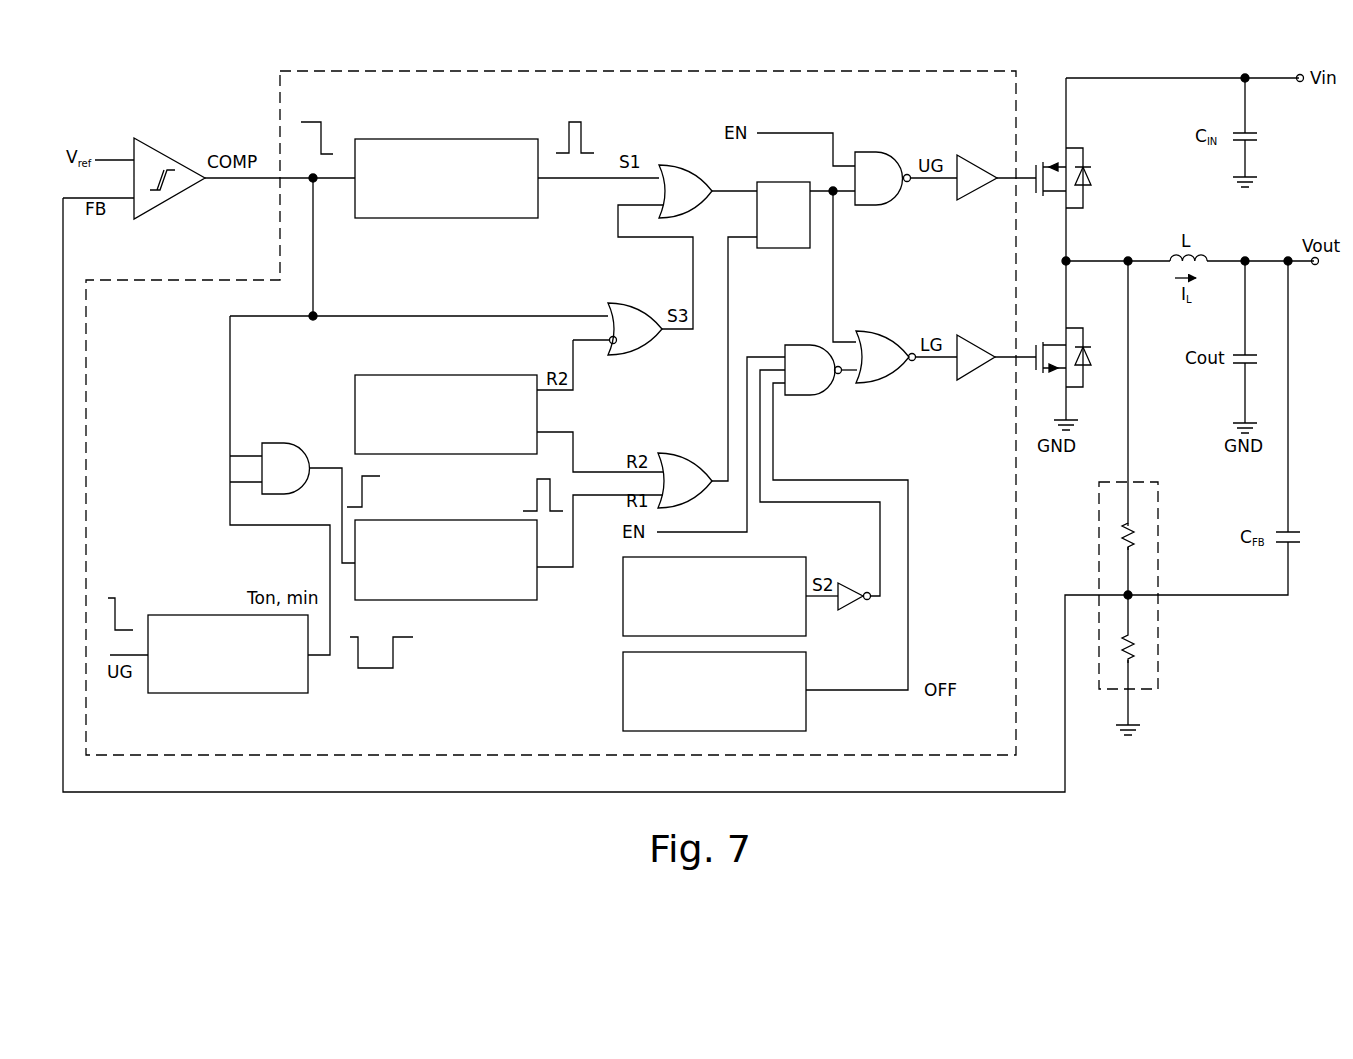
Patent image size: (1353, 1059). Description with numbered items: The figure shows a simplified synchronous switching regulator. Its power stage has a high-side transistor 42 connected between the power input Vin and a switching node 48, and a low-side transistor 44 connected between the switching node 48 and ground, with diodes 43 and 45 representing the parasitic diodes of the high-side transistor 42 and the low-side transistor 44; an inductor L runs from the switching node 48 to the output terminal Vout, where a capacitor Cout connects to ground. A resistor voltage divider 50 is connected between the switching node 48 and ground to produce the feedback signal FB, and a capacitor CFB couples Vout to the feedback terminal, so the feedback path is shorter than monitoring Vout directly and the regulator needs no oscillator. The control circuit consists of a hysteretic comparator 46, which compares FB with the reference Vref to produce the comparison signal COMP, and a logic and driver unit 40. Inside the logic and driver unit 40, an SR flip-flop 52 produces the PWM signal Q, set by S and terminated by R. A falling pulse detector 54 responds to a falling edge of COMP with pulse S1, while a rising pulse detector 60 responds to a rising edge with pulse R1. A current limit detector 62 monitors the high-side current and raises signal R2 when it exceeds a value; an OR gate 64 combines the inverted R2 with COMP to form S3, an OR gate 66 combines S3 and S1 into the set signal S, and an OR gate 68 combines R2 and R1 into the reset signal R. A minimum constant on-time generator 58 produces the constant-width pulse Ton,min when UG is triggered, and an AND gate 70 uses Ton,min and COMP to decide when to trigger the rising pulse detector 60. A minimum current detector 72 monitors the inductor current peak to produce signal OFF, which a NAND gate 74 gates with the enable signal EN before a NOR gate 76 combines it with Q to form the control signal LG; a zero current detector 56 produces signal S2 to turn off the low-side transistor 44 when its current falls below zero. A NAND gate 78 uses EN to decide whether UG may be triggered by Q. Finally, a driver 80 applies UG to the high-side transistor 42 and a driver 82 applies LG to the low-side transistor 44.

The logic and driver unit 40 is at (280, 253).
The high-side transistor 42 is at (1027, 196).
The parasitic diode 43 is at (1104, 180).
The low-side transistor 44 is at (1030, 378).
The parasitic diode 45 is at (1097, 372).
The hysteretic comparator 46 is at (167, 158).
The switching node 48 is at (1066, 262).
The resistor voltage divider 50 is at (1158, 634).
The SR flip-flop 52 is at (786, 249).
The falling pulse detector 54 is at (440, 139).
The zero current detector 56 is at (623, 598).
The minimum constant on-time generator 58 is at (228, 615).
The rising pulse detector 60 is at (470, 602).
The current limit detector 62 is at (410, 375).
The OR gate 64 is at (642, 350).
The OR gate 66 is at (690, 174).
The OR gate 68 is at (688, 453).
The AND gate 70 is at (282, 442).
The minimum current detector 72 is at (623, 690).
The NAND gate 74 is at (812, 396).
The NOR gate 76 is at (885, 333).
The NAND gate 78 is at (885, 152).
The driver 80 is at (978, 157).
The driver 82 is at (976, 372).